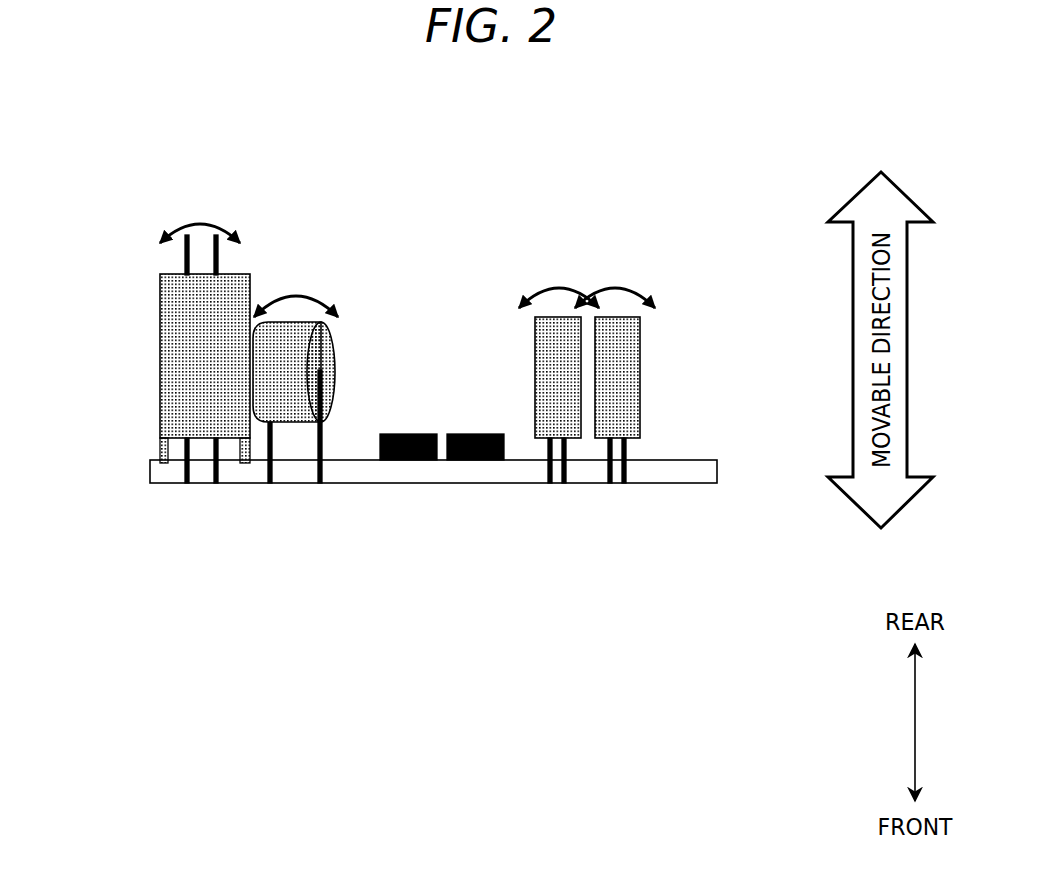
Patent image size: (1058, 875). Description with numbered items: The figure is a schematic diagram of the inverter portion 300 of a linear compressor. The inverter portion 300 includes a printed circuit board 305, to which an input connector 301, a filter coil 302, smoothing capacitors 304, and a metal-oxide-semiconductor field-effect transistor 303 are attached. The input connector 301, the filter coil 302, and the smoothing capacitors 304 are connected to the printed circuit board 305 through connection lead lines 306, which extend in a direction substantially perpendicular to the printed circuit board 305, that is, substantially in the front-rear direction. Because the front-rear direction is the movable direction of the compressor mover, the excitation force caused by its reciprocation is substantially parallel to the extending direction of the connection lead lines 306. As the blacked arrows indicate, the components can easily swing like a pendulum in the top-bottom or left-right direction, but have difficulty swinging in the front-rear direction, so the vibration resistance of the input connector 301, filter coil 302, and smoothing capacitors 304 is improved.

The inverter portion 300 is at (134, 198).
The input connector 301 is at (175, 367).
The filter coil 302 is at (290, 333).
The metal-oxide-semiconductor field-effect transistor (MOSFET) 303 is at (398, 433).
The smoothing capacitors 304 is at (625, 327).
The printed circuit board 305 is at (690, 468).
The connection lead lines 306 is at (184, 468).